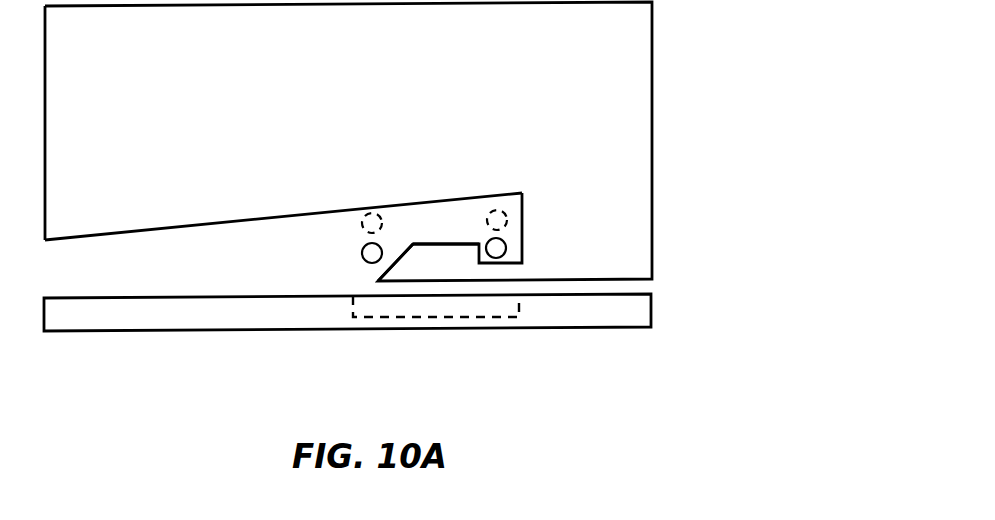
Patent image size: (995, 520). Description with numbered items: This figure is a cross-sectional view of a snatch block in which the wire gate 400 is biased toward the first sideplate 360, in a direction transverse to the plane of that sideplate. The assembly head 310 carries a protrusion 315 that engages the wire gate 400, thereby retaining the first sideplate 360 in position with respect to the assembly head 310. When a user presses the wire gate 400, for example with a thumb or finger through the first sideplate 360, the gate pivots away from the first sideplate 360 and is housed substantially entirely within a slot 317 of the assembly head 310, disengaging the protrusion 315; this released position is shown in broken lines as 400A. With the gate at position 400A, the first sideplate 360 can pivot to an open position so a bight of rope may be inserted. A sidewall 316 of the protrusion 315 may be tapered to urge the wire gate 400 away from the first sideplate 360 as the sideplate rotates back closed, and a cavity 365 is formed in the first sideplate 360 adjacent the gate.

The assembly head 310 is at (610, 95).
The protrusion 315 is at (447, 257).
The sidewall 316 is at (387, 262).
The slot 317 is at (433, 202).
The first sideplate 360 is at (617, 305).
The cavity 365 is at (488, 317).
The wire gate 400 is at (502, 248).
The disengaged wire gate position 400A is at (507, 220).